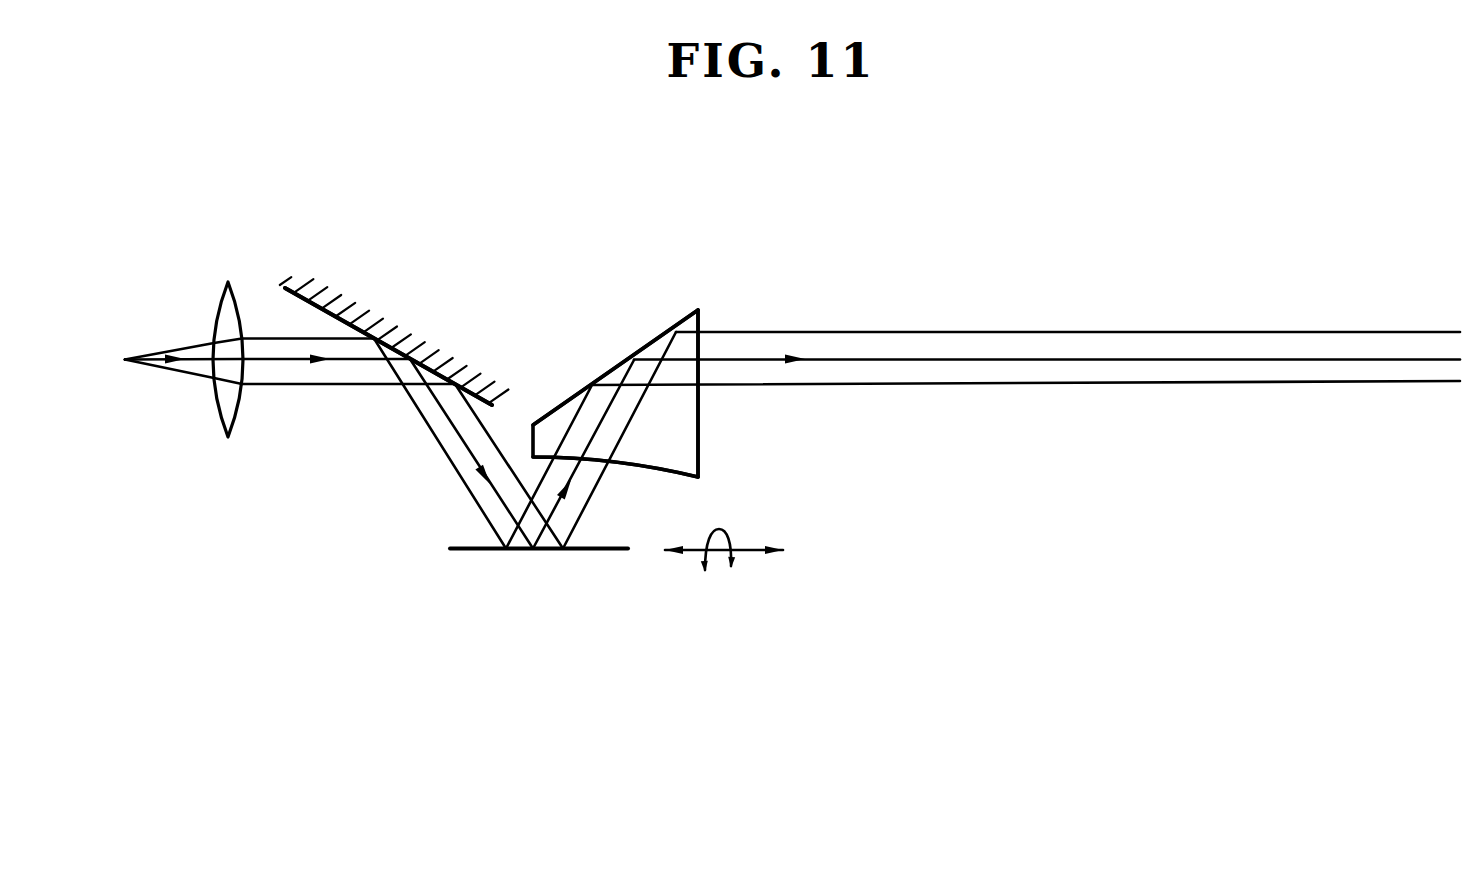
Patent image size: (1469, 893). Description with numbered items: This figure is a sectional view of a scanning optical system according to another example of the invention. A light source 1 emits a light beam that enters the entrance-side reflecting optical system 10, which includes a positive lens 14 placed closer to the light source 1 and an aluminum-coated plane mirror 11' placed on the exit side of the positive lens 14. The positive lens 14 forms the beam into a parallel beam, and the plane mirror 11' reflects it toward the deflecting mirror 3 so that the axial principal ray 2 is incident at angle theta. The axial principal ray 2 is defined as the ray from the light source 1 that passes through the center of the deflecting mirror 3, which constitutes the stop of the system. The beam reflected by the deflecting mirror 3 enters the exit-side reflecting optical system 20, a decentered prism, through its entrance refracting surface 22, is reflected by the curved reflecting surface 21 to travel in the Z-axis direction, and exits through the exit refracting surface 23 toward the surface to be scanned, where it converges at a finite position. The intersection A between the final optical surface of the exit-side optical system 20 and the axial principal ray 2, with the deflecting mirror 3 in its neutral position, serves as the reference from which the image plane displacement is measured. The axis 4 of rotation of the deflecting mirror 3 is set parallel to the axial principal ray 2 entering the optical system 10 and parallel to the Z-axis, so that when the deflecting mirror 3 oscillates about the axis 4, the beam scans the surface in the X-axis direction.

The light source 1 is at (125, 362).
The axial principal ray 2 is at (200, 364).
The positive lens 14 is at (228, 437).
The reflecting optical system 10 is at (405, 285).
The plane mirror 11' is at (367, 310).
The deflecting mirror 3 is at (553, 551).
The exit-side reflecting optical system 20 is at (645, 315).
The reflecting surface 21 is at (585, 388).
The entrance refracting surface 22 is at (645, 467).
The exit refracting surface 23 is at (700, 423).
The intersection A is at (740, 325).
The axis of rotation 4 is at (750, 552).